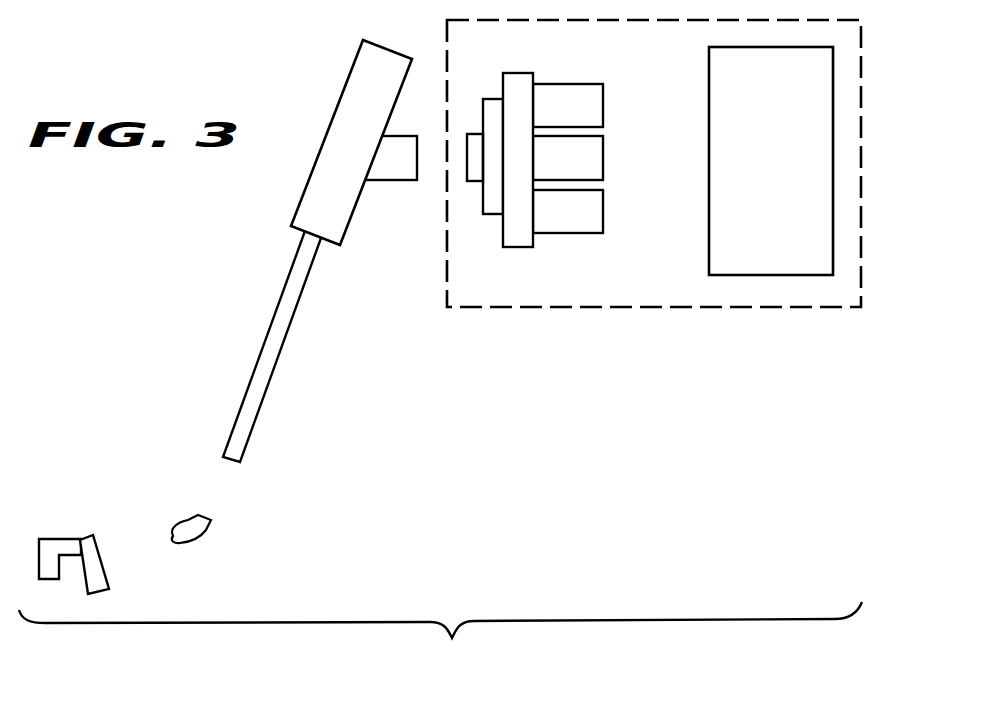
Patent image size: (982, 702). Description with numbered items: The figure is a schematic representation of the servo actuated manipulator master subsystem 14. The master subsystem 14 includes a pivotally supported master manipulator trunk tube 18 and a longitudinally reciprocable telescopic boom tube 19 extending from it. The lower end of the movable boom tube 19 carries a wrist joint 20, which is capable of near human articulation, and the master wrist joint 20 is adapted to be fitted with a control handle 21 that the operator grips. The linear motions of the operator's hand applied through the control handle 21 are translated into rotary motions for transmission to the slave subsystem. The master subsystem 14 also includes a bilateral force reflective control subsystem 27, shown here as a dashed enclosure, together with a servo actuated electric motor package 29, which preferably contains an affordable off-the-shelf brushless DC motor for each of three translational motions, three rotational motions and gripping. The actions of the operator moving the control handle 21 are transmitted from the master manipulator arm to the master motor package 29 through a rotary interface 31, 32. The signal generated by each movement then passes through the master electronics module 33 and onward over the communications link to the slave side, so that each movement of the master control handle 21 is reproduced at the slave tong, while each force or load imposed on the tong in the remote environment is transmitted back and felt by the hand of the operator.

The master subsystem 14 is at (580, 308).
The master manipulator trunk tube 18 is at (334, 113).
The telescopic boom tube 19 is at (271, 326).
The wrist joint 20 is at (212, 531).
The control handle 21 is at (62, 540).
The bilateral force reflective control subsystem 27 is at (680, 310).
The master motor package 29 is at (520, 73).
The rotary interface 31 is at (417, 167).
The rotary interface 32 is at (467, 145).
The master electronics module 33 is at (709, 170).